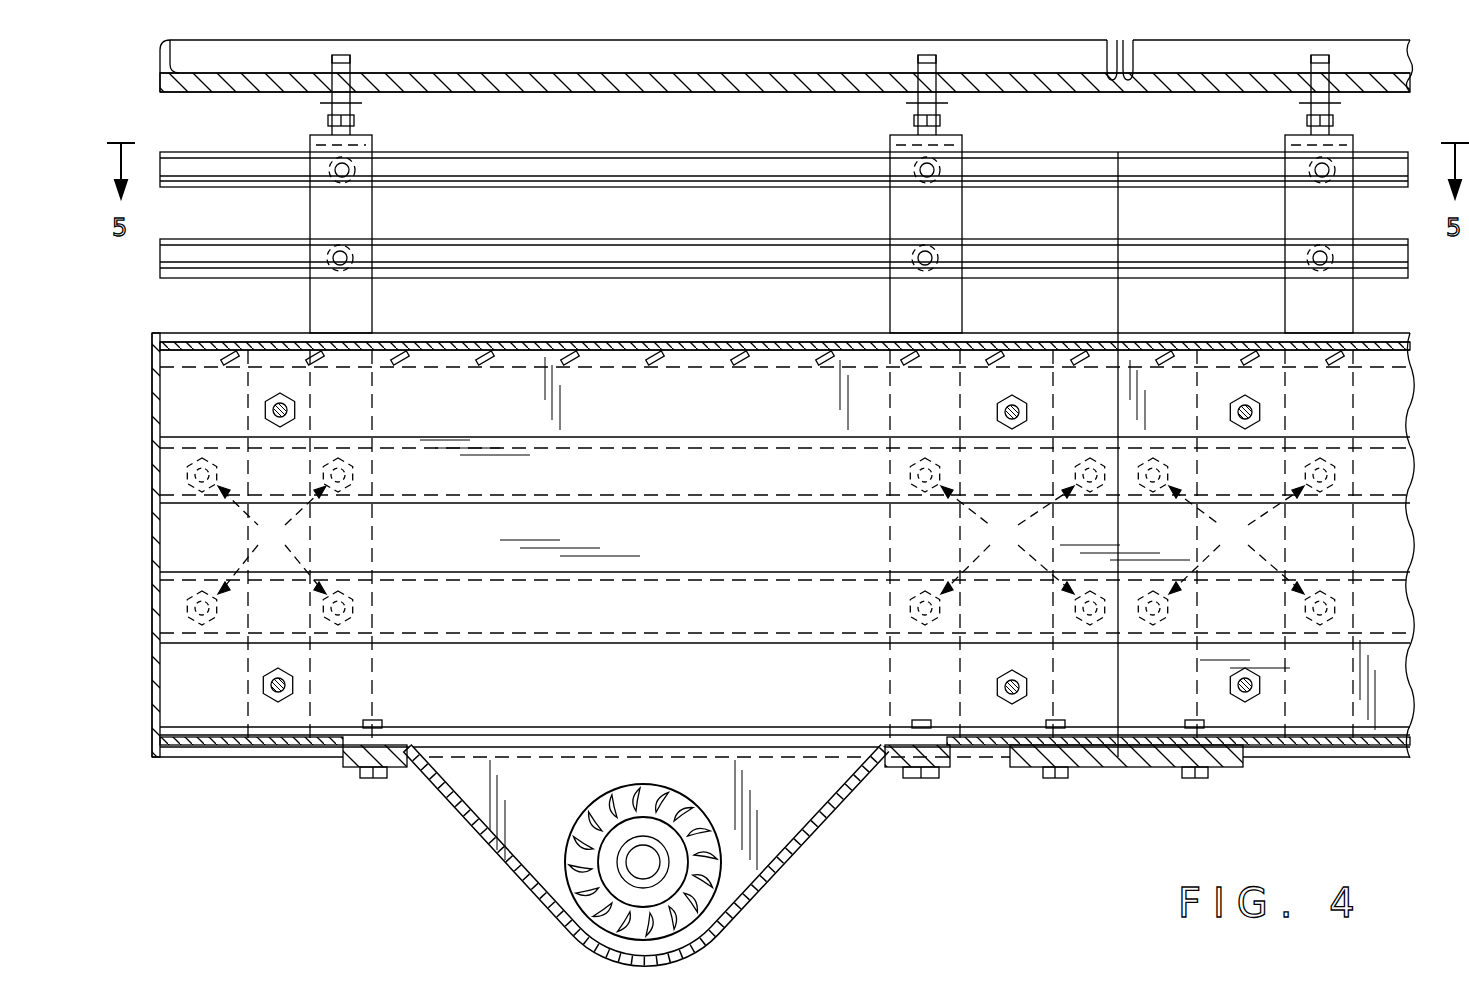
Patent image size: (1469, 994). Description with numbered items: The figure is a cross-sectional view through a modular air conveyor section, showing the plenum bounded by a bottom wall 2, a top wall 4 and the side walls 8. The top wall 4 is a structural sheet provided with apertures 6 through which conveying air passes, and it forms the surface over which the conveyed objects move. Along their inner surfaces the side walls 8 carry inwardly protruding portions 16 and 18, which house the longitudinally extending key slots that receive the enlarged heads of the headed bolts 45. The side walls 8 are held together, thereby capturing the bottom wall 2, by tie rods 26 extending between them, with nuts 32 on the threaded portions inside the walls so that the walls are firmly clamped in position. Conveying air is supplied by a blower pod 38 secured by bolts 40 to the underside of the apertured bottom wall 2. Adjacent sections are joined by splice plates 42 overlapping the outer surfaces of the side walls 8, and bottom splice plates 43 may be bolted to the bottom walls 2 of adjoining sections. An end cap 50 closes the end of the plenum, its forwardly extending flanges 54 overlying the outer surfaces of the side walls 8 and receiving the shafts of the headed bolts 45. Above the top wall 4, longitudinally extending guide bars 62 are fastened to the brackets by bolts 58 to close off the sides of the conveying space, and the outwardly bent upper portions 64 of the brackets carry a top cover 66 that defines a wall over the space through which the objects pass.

The bottom wall 2 is at (304, 750).
The top wall 4 is at (617, 345).
The apertures 6 is at (554, 344).
The side walls 8 is at (696, 547).
The inwardly protruding portion 16 is at (728, 484).
The inwardly protruding portion 18 is at (741, 618).
The tie rods 26 is at (362, 376).
The nuts 32 is at (265, 408).
The blower pods 38 is at (828, 818).
The bolts 40 is at (382, 780).
The splice plates 42 is at (1095, 700).
The bottom splice plates 43 is at (1232, 768).
The headed bolts 45 is at (760, 541).
The end caps 50 is at (150, 688).
The flanges 54 is at (214, 345).
The bolts 58 is at (370, 172).
The guide bars 62 is at (835, 172).
The outwardly bent upper portions 64 is at (960, 137).
The top cover 66 is at (706, 84).